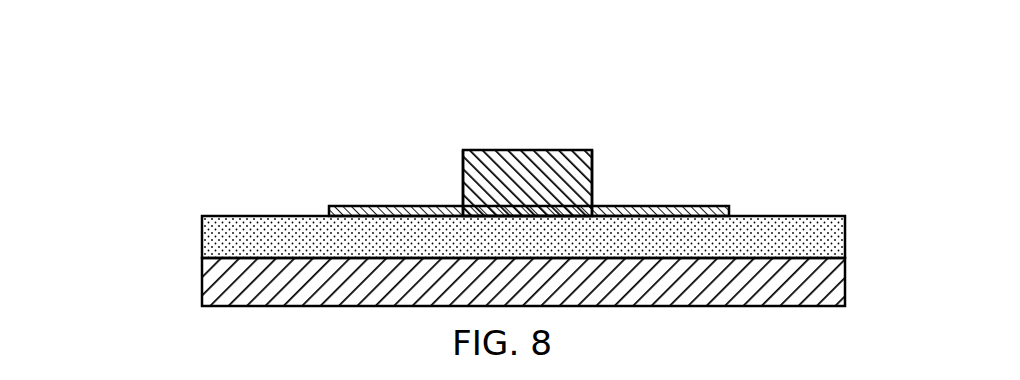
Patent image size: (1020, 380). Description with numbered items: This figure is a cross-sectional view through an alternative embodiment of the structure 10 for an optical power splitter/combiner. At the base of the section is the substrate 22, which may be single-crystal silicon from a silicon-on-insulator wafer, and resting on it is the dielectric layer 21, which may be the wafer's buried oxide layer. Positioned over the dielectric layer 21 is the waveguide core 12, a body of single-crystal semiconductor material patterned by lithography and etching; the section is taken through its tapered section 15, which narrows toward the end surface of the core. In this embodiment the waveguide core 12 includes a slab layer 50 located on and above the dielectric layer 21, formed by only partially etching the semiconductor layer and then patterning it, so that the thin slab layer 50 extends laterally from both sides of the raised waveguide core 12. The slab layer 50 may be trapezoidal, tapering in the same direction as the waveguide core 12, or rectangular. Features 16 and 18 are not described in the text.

The structure 10 is at (133, 73).
The waveguide core 12 is at (440, 155).
The tapered section 15 is at (540, 180).
The first side portion 16 is at (463, 192).
The second side portion 18 is at (592, 203).
The dielectric layer 21 is at (233, 245).
The substrate 22 is at (233, 294).
The slab layer 50 is at (348, 206).